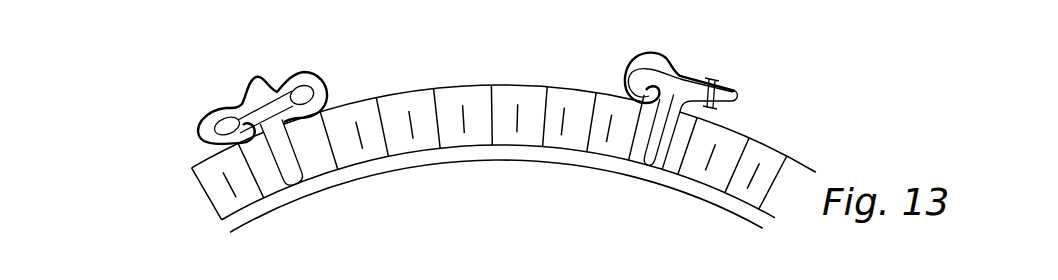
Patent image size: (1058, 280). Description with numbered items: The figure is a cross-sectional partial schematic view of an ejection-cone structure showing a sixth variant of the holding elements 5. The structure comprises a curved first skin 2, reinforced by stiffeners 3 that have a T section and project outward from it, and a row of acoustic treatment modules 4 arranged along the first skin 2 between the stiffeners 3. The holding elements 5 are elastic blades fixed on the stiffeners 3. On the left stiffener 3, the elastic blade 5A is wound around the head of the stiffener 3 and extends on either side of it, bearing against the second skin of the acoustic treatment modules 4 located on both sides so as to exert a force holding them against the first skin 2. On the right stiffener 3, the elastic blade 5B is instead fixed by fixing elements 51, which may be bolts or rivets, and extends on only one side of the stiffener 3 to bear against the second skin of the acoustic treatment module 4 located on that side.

The first skin 2 is at (487, 148).
The stiffeners 3 is at (298, 174).
The acoustic treatment modules 4 is at (194, 157).
The holding elements 5 is at (88, 233).
The elastic blade 5A is at (311, 72).
The elastic blade 5B is at (678, 86).
The fixing elements 51 is at (718, 77).